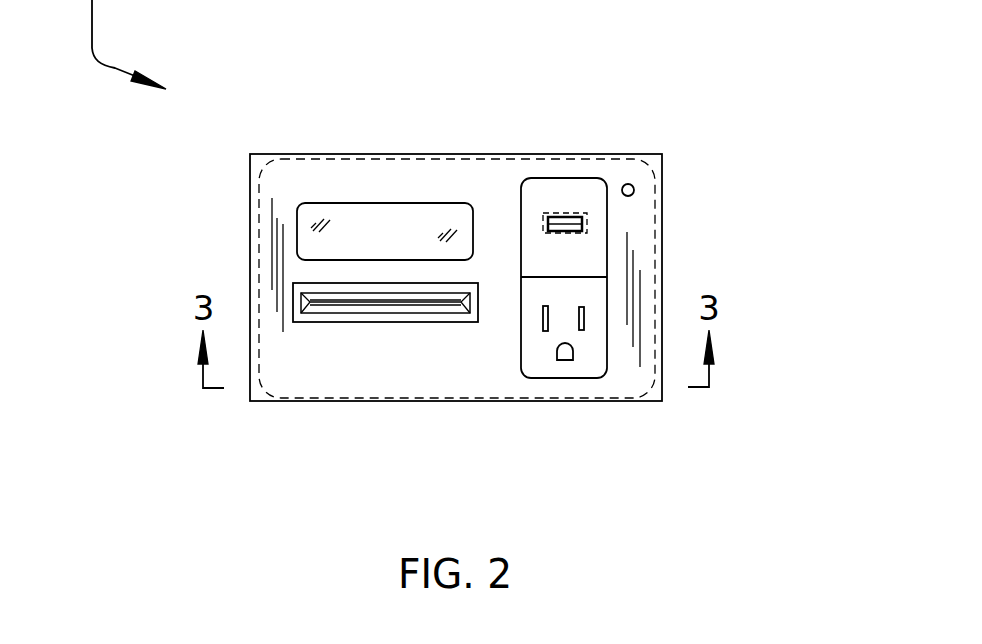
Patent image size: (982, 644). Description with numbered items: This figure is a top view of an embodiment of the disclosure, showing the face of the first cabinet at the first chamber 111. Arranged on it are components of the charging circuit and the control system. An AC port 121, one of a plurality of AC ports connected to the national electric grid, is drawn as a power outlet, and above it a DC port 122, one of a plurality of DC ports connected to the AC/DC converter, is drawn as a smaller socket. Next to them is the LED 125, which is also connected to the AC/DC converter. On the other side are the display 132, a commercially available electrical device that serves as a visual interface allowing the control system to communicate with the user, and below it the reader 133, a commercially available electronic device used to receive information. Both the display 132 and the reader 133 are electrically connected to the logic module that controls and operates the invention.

The first chamber 111 is at (662, 232).
The AC port 121 is at (521, 335).
The DC port 122 is at (564, 213).
The LED 125 is at (634, 190).
The display 132 is at (297, 232).
The reader 133 is at (320, 322).